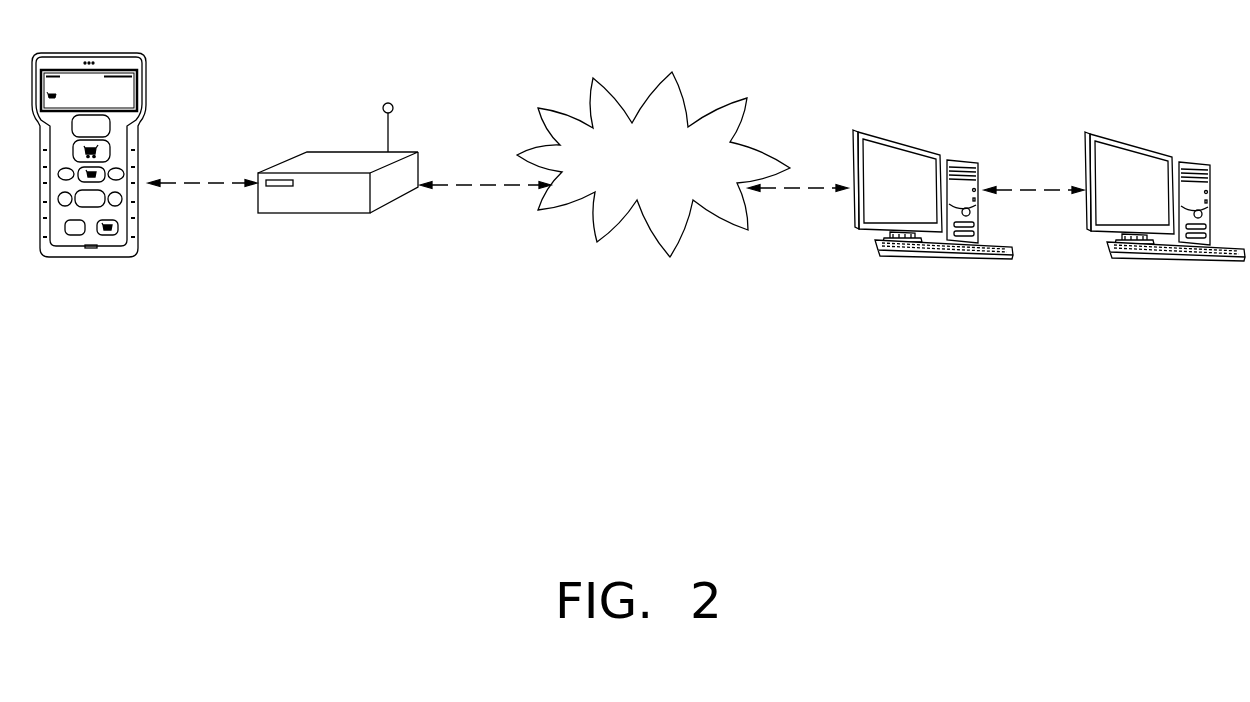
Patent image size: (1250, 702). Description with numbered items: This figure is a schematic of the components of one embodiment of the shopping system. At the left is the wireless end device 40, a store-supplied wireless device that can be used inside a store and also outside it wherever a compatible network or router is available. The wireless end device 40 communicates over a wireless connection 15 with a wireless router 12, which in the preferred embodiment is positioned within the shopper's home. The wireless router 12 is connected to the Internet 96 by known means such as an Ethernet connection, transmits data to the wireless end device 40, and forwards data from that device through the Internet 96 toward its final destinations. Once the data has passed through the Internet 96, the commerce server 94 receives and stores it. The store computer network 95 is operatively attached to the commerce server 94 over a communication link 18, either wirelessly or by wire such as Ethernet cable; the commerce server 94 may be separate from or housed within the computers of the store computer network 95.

The wireless end device 40 is at (150, 53).
The wireless connection 15 is at (197, 184).
The wireless router 12 is at (393, 142).
The Internet 96 is at (687, 100).
The commerce server 94 is at (947, 147).
The communication link 18 is at (1033, 191).
The store computer network 95 is at (1145, 138).